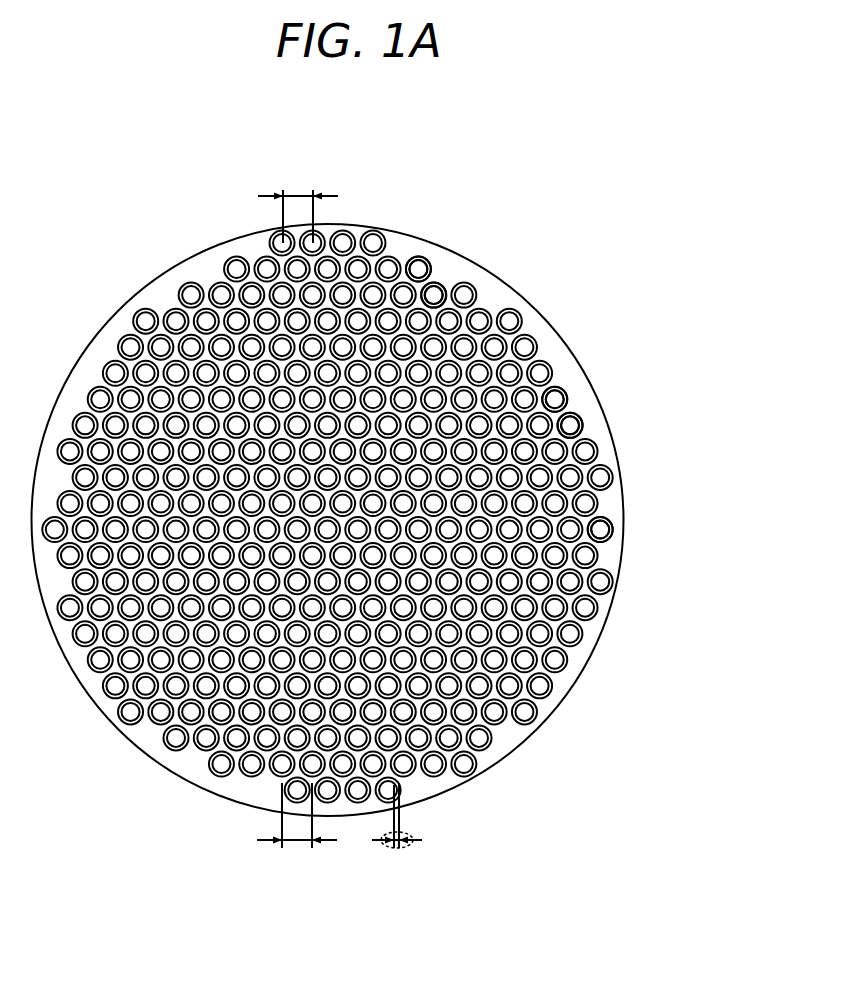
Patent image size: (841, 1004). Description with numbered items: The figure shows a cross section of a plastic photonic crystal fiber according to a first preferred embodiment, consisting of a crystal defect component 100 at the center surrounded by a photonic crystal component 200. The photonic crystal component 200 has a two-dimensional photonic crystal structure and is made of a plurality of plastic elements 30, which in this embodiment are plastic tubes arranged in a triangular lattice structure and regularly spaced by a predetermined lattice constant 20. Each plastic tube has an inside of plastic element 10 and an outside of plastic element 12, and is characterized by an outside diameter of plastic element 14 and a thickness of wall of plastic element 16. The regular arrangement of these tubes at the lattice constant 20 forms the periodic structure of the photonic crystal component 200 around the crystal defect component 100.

The inside of plastic element 10 is at (434, 296).
The outside of plastic element 12 is at (563, 388).
The outside diameter of plastic element 14 is at (297, 845).
The thickness of wall of plastic element 16 is at (401, 849).
The lattice constant 20 is at (298, 194).
The plurality of plastic elements 30 is at (603, 533).
The crystal defect component 100 is at (323, 533).
The photonic crystal component 200 is at (573, 653).